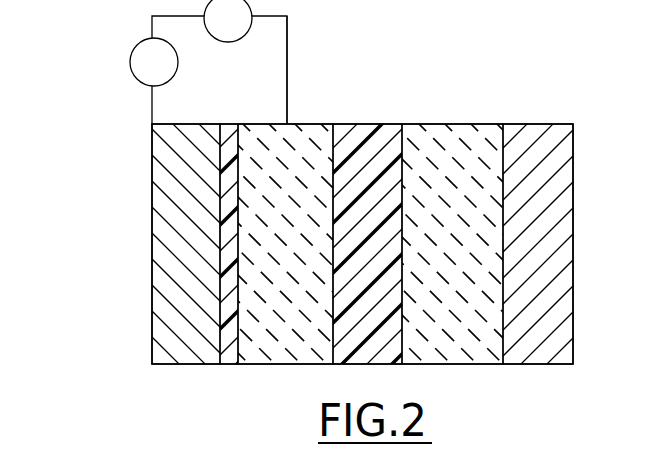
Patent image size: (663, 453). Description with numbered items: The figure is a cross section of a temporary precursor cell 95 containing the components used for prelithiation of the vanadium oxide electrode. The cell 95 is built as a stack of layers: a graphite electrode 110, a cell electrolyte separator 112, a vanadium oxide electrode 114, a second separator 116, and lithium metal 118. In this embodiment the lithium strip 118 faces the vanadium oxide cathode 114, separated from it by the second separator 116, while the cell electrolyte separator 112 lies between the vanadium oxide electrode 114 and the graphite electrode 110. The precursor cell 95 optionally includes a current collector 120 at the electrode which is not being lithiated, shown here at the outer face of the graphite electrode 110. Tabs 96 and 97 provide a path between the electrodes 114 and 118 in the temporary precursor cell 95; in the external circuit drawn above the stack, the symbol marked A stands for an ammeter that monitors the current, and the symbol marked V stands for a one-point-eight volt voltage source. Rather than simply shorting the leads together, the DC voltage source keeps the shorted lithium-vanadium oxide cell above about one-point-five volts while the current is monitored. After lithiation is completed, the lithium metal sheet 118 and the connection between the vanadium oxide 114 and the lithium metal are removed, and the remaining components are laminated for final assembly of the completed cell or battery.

The temporary precursor cell 95 is at (108, 253).
The tab 96 is at (152, 103).
The tab 97 is at (287, 73).
The graphite electrode 110 is at (452, 364).
The cell electrolyte separator 112 is at (365, 363).
The vanadium oxide electrode 114 is at (277, 363).
The second separator 116 is at (228, 363).
The lithium metal 118 is at (160, 348).
The current collector 120 is at (543, 364).